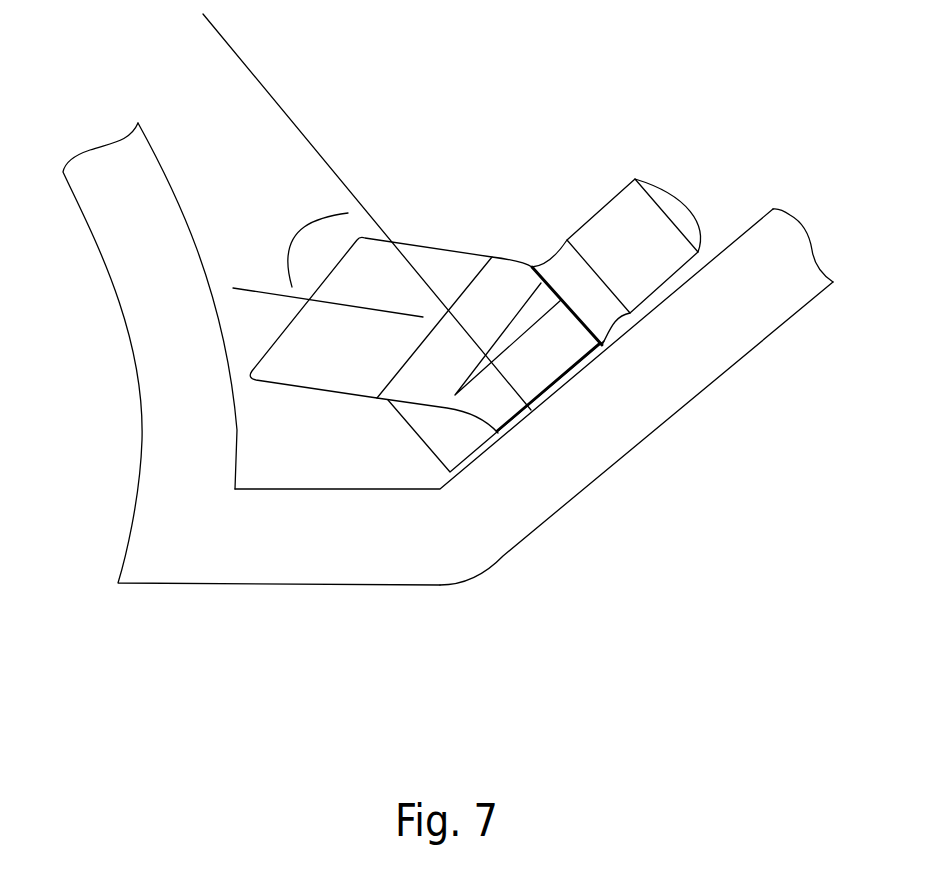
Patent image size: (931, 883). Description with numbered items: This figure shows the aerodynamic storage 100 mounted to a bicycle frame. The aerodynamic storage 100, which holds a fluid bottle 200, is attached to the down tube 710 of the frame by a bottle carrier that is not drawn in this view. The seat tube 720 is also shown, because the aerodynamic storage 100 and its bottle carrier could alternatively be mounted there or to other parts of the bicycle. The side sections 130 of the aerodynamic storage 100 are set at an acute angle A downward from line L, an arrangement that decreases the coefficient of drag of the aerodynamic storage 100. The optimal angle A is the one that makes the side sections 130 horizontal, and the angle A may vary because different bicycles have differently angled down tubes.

The aerodynamic storage 100 is at (427, 290).
The side sections 130 is at (348, 364).
The fluid bottle 200 is at (644, 259).
The down tube 710 is at (620, 433).
The seat tube 720 is at (132, 255).
The line L is at (367, 212).
The acute angle A is at (328, 261).